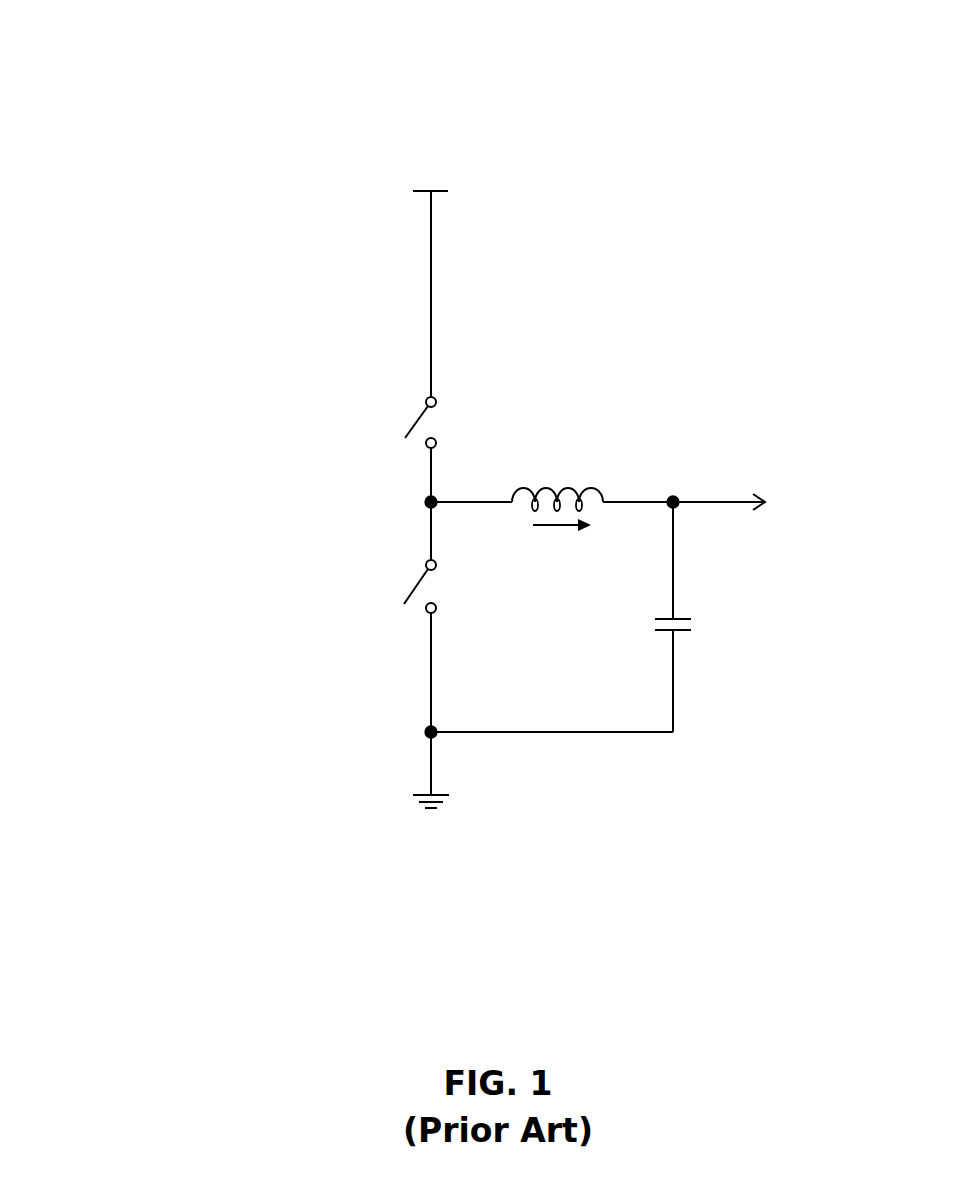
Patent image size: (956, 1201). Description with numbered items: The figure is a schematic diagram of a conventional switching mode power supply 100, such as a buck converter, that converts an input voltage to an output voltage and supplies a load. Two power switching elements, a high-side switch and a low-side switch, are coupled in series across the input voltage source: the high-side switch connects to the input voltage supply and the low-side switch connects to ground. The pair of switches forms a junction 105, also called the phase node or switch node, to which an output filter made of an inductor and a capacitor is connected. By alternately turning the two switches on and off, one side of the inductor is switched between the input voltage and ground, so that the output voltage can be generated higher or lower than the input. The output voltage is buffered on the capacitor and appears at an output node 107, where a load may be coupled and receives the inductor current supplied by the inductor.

The prior art buck converter circuit 100 is at (90, 33).
The junction 105 is at (416, 505).
The output node 107 is at (686, 510).